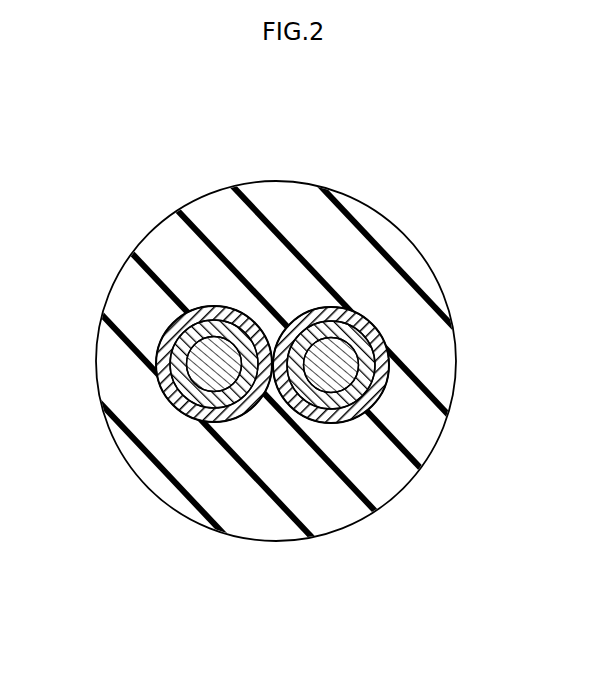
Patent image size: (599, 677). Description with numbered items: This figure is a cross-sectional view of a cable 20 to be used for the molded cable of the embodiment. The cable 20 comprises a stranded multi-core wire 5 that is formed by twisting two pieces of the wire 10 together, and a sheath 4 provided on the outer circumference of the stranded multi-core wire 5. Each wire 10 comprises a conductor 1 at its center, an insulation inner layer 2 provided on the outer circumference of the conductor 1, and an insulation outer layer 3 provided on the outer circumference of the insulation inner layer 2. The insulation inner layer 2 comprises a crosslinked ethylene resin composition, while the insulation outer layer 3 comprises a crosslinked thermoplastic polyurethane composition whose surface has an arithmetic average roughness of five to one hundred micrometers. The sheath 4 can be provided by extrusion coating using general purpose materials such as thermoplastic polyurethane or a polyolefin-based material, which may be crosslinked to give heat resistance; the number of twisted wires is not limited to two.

The cable 20 is at (299, 365).
The sheath 4 is at (365, 453).
The stranded multi-core wire 5 is at (346, 324).
The wire 10 is at (335, 327).
The conductor 1 is at (343, 363).
The insulation inner layer 2 is at (373, 371).
The insulation outer layer 3 is at (380, 393).